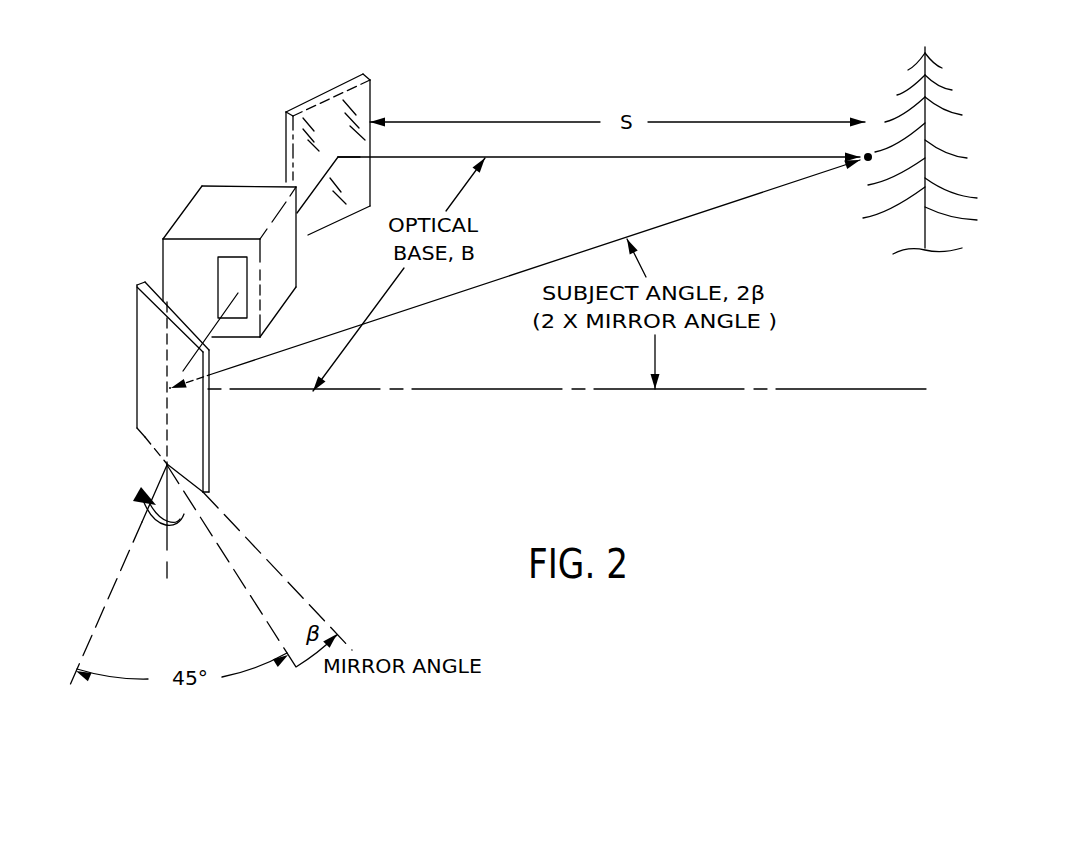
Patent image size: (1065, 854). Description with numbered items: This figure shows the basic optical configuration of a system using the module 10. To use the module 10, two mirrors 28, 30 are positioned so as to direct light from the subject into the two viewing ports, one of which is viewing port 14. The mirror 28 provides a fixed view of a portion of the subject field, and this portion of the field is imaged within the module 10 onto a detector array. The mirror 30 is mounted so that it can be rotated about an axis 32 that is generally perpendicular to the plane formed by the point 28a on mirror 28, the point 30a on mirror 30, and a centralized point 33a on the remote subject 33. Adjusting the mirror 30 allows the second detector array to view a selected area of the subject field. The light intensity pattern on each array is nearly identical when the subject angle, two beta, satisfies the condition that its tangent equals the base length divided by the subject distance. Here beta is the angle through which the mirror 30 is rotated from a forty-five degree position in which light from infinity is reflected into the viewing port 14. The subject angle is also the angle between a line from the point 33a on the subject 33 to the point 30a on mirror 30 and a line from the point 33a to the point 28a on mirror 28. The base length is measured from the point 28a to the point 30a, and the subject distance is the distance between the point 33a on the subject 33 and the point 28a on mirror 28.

The module 10 is at (210, 186).
The viewing port 14 is at (230, 274).
The mirror 28 is at (327, 92).
The point on mirror 28 28a is at (338, 158).
The mirror 30 is at (137, 335).
The point on mirror 30 30a is at (172, 393).
The axis 32 is at (168, 547).
The remote subject 33 is at (952, 150).
The centralized point 33a is at (865, 164).